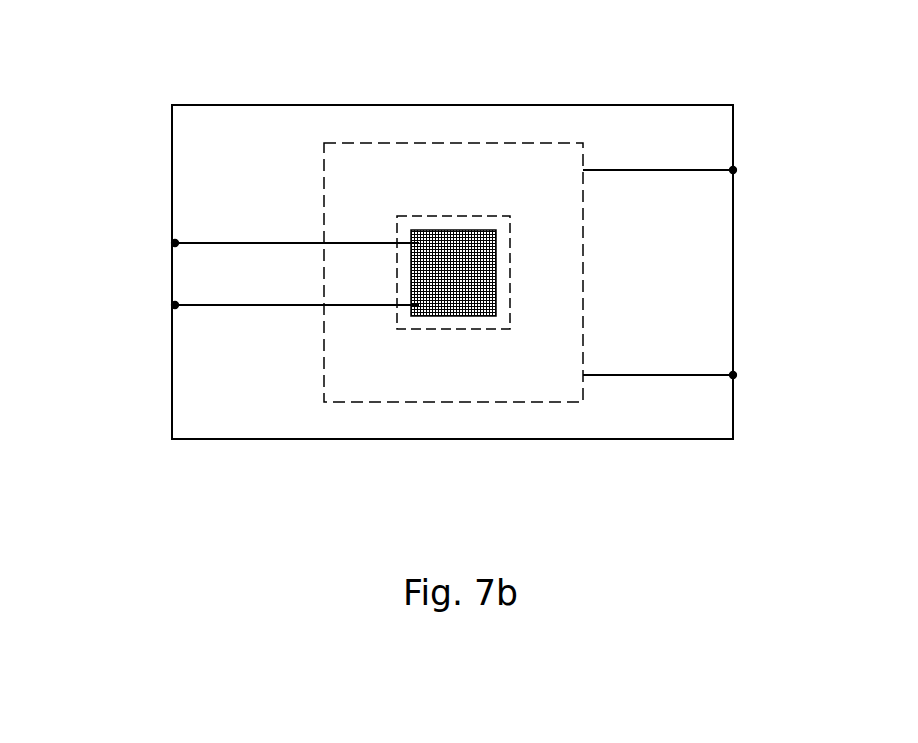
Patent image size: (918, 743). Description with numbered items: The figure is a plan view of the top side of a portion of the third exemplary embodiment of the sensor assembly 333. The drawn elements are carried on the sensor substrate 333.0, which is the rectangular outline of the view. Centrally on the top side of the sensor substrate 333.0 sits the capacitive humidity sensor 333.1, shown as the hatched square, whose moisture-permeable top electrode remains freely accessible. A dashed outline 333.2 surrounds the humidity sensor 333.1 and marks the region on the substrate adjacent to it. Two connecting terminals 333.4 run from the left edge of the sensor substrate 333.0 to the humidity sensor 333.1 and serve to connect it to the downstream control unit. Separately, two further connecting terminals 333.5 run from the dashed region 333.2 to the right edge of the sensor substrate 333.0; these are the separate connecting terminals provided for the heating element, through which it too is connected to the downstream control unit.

The sensor assembly 333 is at (126, 271).
The sensor substrate 333.0 is at (674, 117).
The humidity sensor 333.1 is at (435, 312).
The sensor region (dashed) 333.2 is at (502, 405).
The connecting terminals 333.4 is at (172, 243).
The connecting terminals 333.5 is at (736, 172).